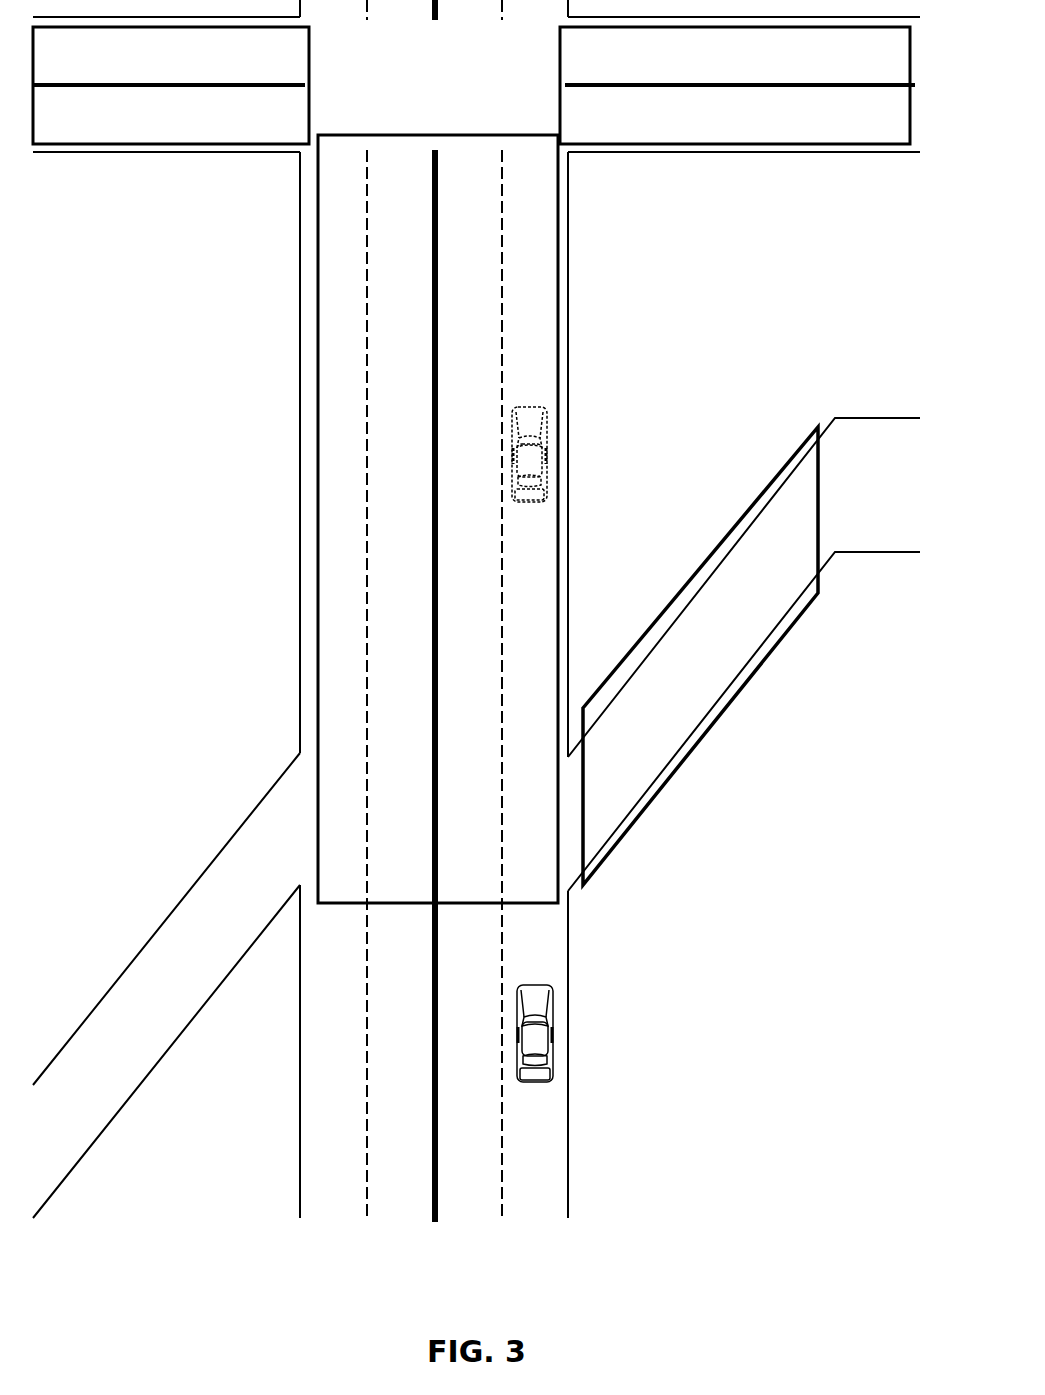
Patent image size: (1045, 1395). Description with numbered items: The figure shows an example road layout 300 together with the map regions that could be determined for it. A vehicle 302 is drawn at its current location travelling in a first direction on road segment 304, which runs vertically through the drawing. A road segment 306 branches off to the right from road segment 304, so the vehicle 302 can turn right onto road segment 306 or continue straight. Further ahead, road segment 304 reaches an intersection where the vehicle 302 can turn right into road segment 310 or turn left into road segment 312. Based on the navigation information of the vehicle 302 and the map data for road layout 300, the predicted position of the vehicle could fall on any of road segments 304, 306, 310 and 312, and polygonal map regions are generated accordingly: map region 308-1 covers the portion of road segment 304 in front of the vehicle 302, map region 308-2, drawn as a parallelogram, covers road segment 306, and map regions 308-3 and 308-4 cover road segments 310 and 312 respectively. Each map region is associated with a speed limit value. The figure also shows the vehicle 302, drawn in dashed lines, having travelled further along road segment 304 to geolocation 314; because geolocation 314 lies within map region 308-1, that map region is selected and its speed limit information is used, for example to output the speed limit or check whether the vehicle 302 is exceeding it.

The road layout 300 is at (702, 1188).
The vehicle 302 is at (553, 1035).
The road segment 304 is at (462, 1243).
The road segment 306 is at (733, 485).
The map region 308-1 is at (533, 907).
The map region 308-2 is at (730, 705).
The map region 308-3 is at (680, 145).
The map region 308-4 is at (100, 144).
The road segment 310 is at (535, 80).
The road segment 312 is at (335, 80).
The geolocation 314 is at (546, 458).